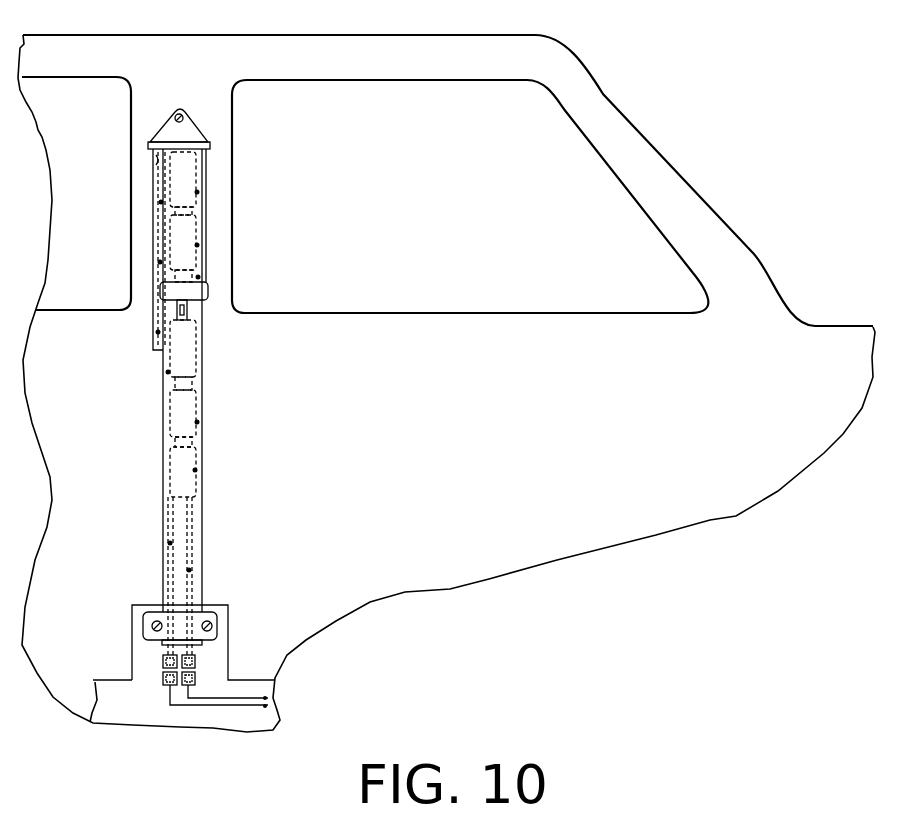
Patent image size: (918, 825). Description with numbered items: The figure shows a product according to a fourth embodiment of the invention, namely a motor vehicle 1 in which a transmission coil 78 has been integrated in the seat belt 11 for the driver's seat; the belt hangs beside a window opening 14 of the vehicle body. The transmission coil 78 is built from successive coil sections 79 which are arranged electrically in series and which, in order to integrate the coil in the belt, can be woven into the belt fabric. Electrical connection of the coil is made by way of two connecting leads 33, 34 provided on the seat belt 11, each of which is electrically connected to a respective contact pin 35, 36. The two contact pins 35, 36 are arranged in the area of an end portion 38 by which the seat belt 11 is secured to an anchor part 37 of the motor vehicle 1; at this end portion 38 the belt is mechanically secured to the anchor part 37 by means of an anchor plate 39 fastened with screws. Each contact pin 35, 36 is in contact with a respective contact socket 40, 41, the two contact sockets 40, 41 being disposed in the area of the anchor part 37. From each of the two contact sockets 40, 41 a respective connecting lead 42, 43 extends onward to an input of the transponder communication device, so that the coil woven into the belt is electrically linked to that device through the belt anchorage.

The motor vehicle 1 is at (742, 132).
The window opening 14 is at (612, 128).
The seat belt 11 is at (215, 307).
The transmission coil 78 is at (205, 390).
The coil sections 79 is at (245, 470).
The connecting lead 33 is at (170, 543).
The connecting lead 34 is at (189, 570).
The anchor part 37 is at (222, 610).
The anchor plate 39 is at (147, 617).
The end portion 38 is at (160, 645).
The contact pin 35 is at (163, 660).
The contact pin 36 is at (196, 660).
The contact socket 40 is at (165, 685).
The contact socket 41 is at (196, 677).
The connecting lead 42 is at (266, 706).
The connecting lead 43 is at (262, 698).